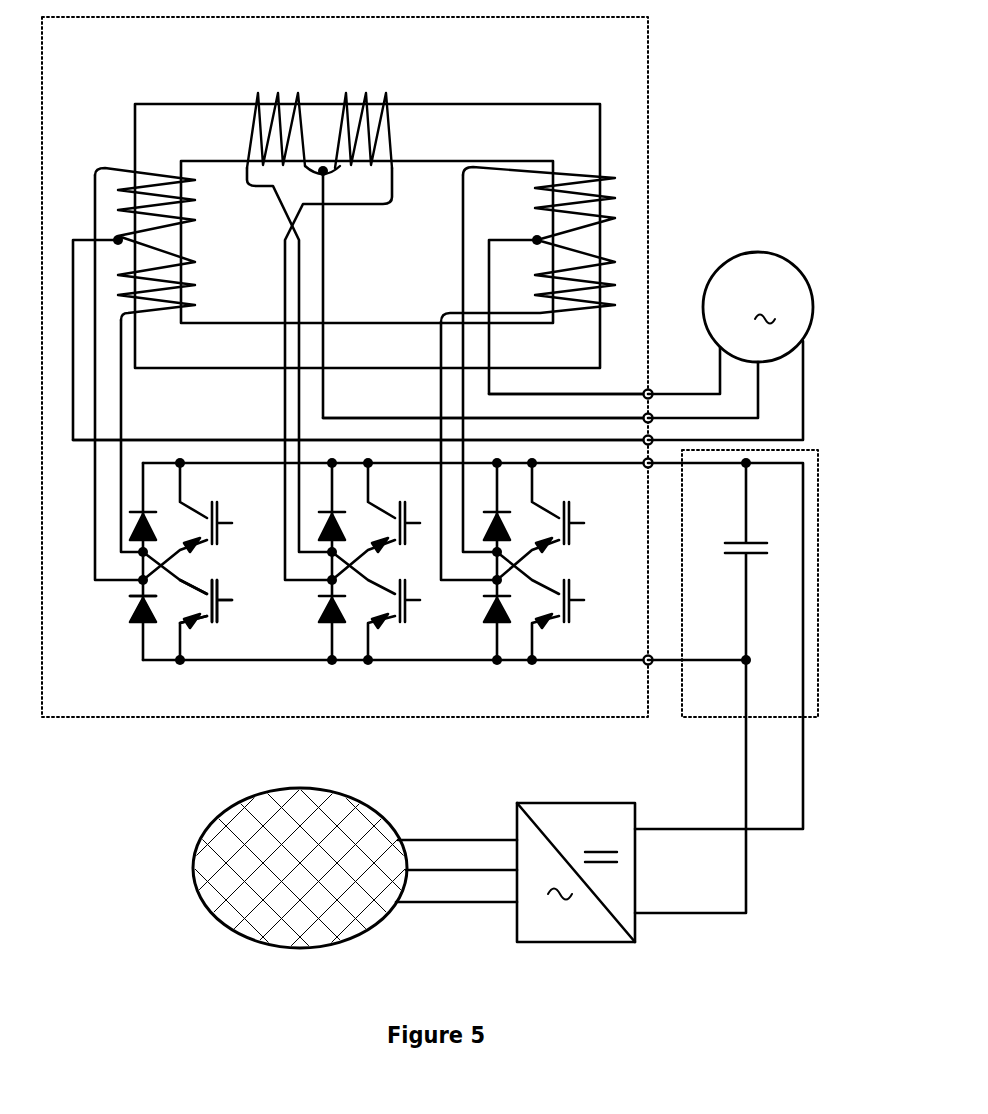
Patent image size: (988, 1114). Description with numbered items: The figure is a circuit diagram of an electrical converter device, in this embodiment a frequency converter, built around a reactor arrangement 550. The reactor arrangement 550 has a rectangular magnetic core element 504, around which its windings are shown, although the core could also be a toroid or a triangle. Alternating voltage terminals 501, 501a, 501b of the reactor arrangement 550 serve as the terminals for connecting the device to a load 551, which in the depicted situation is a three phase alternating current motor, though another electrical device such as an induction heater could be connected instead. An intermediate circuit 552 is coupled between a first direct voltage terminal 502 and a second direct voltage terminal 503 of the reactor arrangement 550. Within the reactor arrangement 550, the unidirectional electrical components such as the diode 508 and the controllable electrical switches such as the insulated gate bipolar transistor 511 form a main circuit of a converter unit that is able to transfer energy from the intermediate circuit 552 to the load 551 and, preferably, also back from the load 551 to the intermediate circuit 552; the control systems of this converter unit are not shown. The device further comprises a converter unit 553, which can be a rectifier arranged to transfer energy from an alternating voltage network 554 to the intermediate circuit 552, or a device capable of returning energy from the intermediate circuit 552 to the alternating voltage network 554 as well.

The alternating voltage terminal 501 is at (652, 437).
The alternating voltage terminal 501a is at (652, 414).
The alternating voltage terminal 501b is at (651, 390).
The first direct voltage terminal 502 is at (645, 466).
The second direct voltage terminal 503 is at (647, 662).
The magnetic core element 504 is at (450, 104).
The unidirectional electrical component 508 is at (132, 607).
The controllable electrical switch 511 is at (228, 588).
The reactor arrangement 550 is at (137, 717).
The load 551 is at (785, 254).
The intermediate circuit 552 is at (706, 719).
The converter unit 553 is at (610, 943).
The alternating voltage network 554 is at (195, 862).